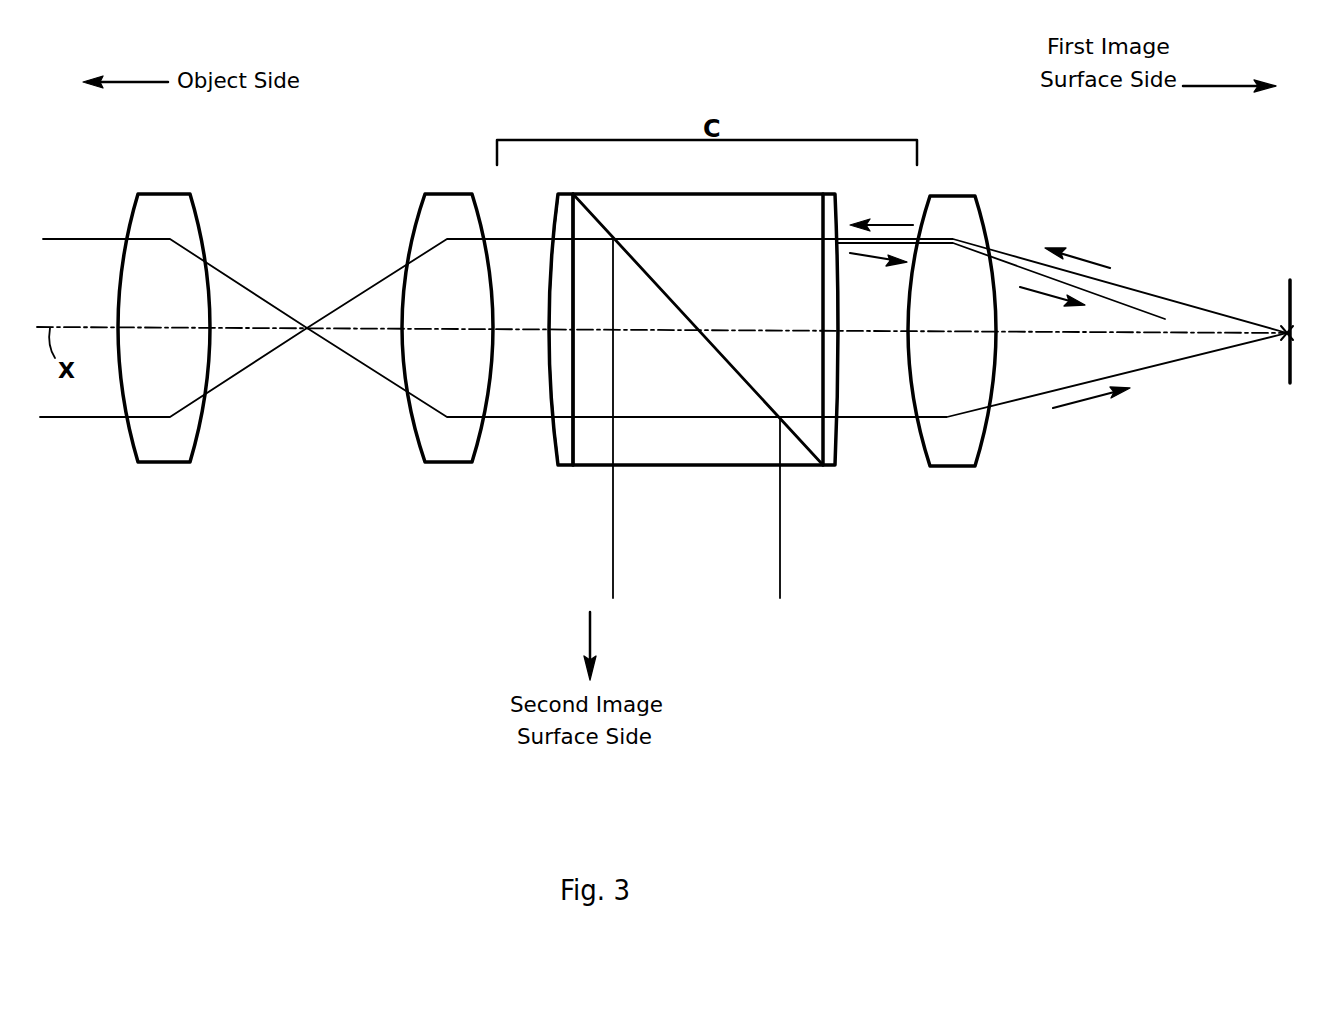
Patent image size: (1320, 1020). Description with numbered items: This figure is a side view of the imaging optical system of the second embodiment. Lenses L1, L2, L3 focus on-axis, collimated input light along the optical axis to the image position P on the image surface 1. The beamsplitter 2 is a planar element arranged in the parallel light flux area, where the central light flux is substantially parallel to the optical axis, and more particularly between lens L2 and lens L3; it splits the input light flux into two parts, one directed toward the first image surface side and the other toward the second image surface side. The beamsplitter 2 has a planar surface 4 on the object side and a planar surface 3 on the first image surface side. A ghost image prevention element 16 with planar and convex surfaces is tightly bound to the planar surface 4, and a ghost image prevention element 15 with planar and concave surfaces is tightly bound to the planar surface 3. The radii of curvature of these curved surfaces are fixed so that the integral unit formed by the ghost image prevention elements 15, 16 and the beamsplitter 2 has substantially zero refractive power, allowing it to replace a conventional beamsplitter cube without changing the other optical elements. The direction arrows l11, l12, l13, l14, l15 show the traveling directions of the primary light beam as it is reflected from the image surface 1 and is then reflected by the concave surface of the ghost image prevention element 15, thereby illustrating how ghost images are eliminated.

The image surface 1 is at (1283, 365).
The beamsplitter 2 is at (803, 467).
The surface on the first image surface side 3 is at (830, 470).
The surface on the object side 4 is at (563, 466).
The ghost image prevention element 15 is at (843, 436).
The ghost image prevention element 16 is at (557, 438).
The lens L1 is at (172, 455).
The lens L2 is at (455, 455).
The lens L3 is at (970, 457).
The direction arrow l11 is at (1091, 413).
The direction arrow l12 is at (1078, 248).
The direction arrow l13 is at (881, 213).
The direction arrow l14 is at (878, 277).
The direction arrow l15 is at (1052, 309).